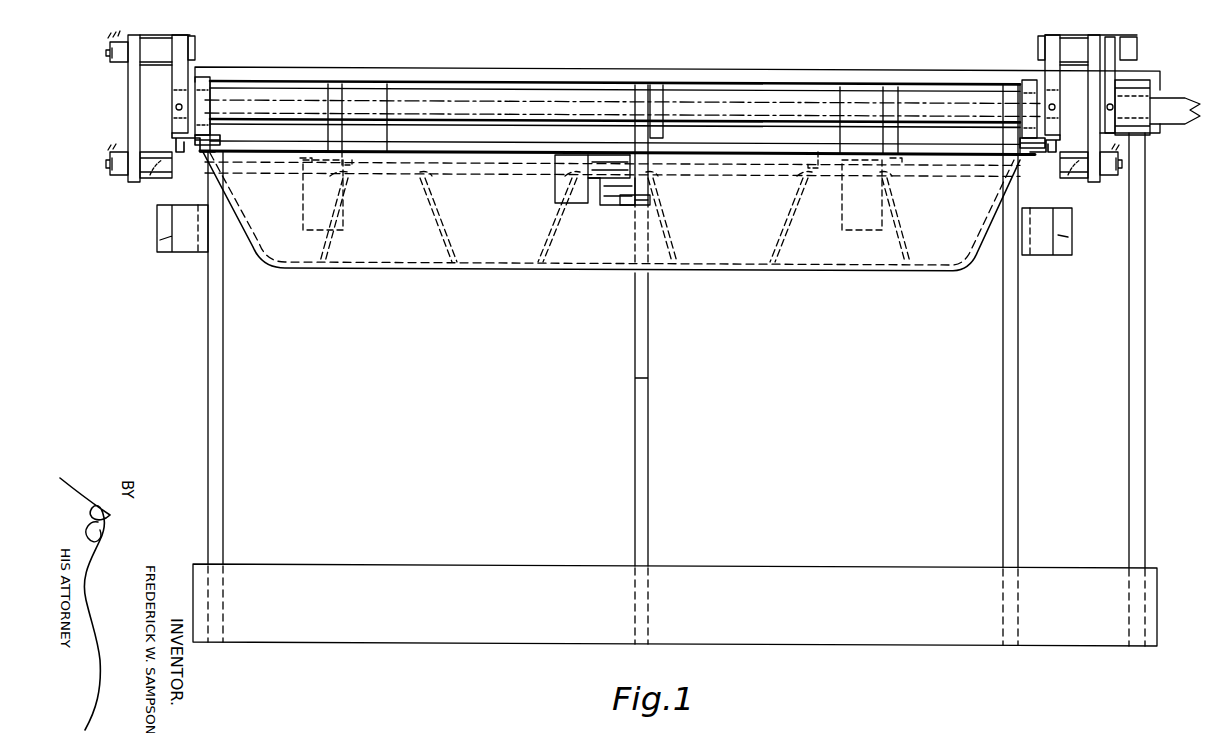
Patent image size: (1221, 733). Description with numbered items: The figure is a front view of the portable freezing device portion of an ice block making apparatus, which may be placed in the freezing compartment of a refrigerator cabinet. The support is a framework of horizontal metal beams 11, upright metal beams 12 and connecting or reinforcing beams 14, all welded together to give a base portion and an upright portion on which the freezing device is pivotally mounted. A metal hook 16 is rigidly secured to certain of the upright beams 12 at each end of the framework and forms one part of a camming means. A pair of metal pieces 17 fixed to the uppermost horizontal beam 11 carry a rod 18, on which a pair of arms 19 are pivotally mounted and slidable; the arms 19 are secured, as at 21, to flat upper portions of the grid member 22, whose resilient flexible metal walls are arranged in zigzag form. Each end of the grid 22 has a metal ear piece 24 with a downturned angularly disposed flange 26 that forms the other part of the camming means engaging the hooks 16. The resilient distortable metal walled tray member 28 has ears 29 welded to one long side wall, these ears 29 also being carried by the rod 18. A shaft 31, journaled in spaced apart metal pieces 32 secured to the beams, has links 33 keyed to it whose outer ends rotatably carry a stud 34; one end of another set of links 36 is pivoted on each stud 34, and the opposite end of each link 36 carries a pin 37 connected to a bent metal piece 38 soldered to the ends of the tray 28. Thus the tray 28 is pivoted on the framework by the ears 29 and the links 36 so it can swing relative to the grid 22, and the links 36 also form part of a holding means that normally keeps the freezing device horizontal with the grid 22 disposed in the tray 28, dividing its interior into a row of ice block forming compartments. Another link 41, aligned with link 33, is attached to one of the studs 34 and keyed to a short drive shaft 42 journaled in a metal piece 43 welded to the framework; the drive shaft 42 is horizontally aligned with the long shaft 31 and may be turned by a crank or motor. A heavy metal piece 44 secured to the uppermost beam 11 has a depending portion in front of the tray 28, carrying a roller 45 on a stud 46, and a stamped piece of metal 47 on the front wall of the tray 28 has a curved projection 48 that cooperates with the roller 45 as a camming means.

The horizontal metal beams 11 is at (527, 73).
The upright metal beams 12 is at (223, 490).
The connecting or reinforcing beams 14 is at (200, 644).
The metal hook piece 16 is at (192, 250).
The metal pieces 17 is at (345, 86).
The rod 18 is at (512, 178).
The arms 19 is at (390, 135).
The securing points of arms to grid 21 is at (373, 156).
The grid member 22 is at (456, 266).
The metal ear piece 24 is at (210, 142).
The downturned angularly disposed flange 26 is at (148, 183).
The tray member 28 is at (375, 271).
The ears 29 is at (348, 210).
The shaft 31 is at (748, 100).
The metal pieces 32 is at (210, 78).
The links 33 is at (174, 82).
The stud 34 is at (193, 42).
The links 36 is at (128, 98).
The pin 37 is at (110, 168).
The bent metal piece 38 is at (185, 156).
The link 41 is at (1116, 80).
The drive shaft 42 is at (1170, 106).
The metal piece 43 is at (1160, 133).
The heavy metal piece 44 is at (641, 84).
The roller 45 is at (630, 205).
The stud 46 is at (604, 202).
The stamped piece of metal 47 is at (553, 192).
The curved or rounded projection 48 is at (597, 153).